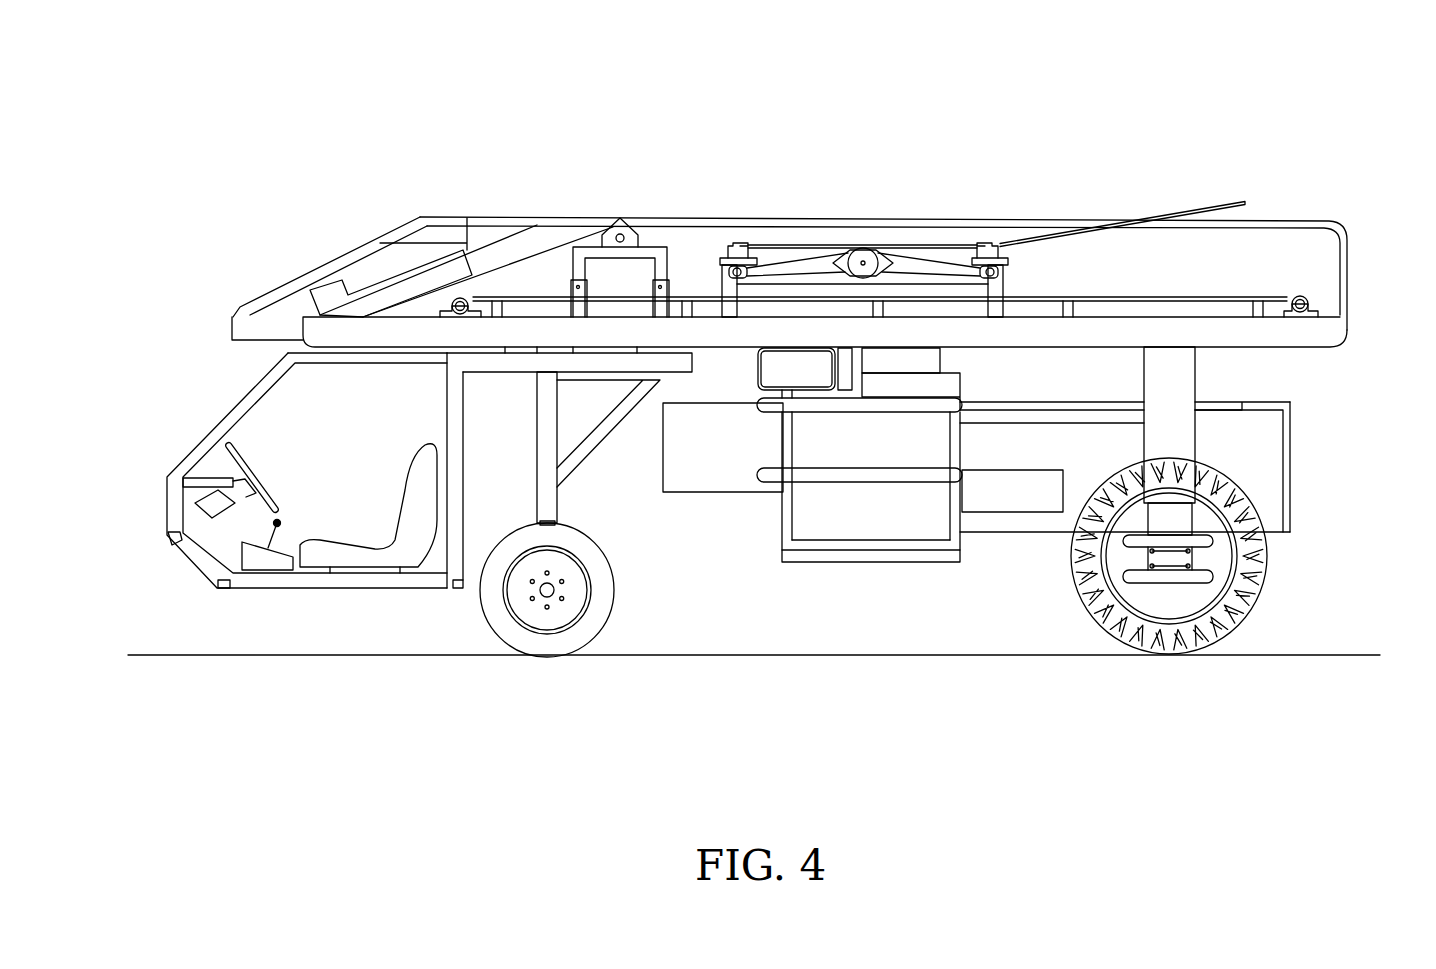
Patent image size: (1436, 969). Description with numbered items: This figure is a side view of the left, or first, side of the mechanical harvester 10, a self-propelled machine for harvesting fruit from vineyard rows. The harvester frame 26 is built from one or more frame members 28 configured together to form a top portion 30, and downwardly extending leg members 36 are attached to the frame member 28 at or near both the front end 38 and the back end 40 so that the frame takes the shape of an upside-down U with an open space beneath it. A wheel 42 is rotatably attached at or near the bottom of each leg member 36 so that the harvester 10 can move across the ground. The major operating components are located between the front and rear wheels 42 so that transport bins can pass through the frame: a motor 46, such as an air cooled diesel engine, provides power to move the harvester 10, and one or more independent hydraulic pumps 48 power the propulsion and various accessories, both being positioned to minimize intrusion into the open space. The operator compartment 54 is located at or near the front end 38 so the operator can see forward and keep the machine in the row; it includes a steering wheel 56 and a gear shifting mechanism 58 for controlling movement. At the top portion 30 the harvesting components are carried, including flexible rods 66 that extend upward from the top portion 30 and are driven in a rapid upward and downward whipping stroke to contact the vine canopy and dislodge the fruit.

The mechanical harvester 10 is at (1308, 177).
The harvester frame 26 is at (1330, 330).
The frame member 28 is at (453, 420).
The top portion 30 is at (1338, 229).
The leg member 36 is at (550, 502).
The front end 38 is at (177, 448).
The back end 40 is at (1308, 438).
The wheel 42 is at (600, 585).
The motor 46 is at (802, 530).
The hydraulic pump 48 is at (990, 493).
The operator compartment 54 is at (290, 420).
The steering wheel 56 is at (272, 490).
The gear shifting mechanism 58 is at (248, 557).
The rod 66 is at (807, 243).